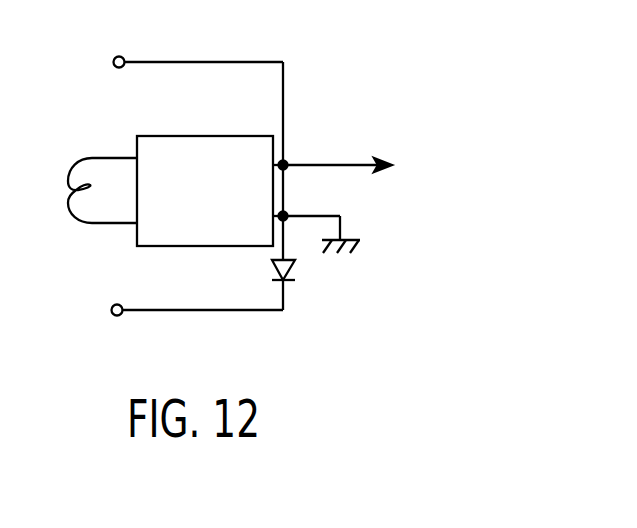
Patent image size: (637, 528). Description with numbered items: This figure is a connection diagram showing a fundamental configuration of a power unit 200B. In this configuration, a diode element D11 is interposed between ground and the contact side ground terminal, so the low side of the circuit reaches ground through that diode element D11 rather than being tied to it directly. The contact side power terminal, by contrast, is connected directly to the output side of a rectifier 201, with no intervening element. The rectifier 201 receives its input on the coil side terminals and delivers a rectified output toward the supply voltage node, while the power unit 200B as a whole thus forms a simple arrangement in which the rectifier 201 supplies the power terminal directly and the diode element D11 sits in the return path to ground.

The power unit 200B is at (512, 56).
The rectifier 201 is at (175, 136).
The diode element D11 is at (292, 270).